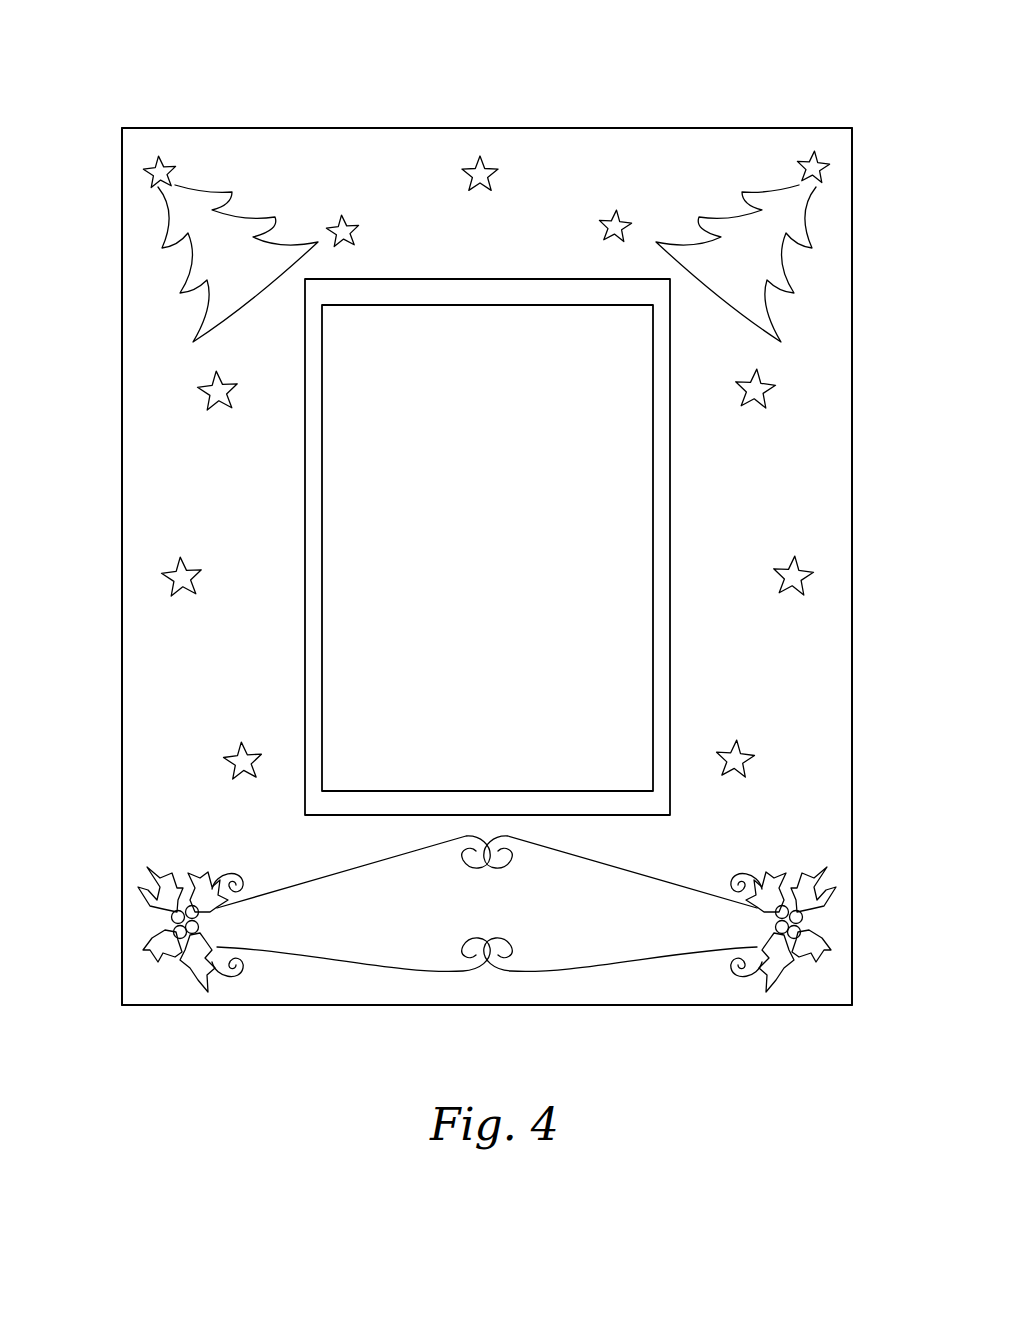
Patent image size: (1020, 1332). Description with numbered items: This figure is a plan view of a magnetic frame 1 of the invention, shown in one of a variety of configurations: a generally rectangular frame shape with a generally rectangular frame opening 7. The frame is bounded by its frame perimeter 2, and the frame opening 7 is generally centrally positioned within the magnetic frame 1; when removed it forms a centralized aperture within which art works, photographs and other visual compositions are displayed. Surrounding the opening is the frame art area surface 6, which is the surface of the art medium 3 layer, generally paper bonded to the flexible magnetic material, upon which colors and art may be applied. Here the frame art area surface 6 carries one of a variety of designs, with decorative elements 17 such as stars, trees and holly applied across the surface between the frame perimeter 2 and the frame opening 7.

The magnetic frame 1 is at (486, 544).
The frame perimeter 2 is at (852, 396).
The art medium 3 is at (800, 460).
The frame art area surface 6 is at (150, 634).
The frame opening 7 is at (467, 375).
The decorative elements 17 is at (782, 218).